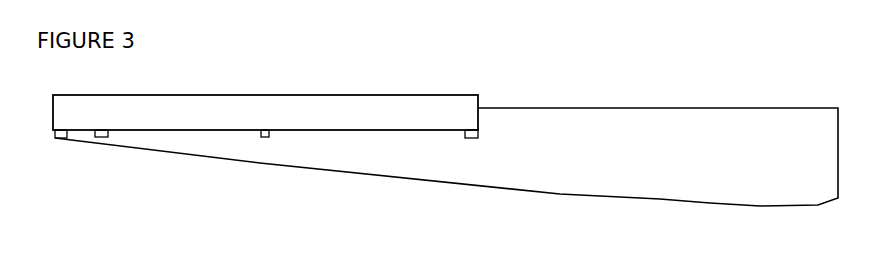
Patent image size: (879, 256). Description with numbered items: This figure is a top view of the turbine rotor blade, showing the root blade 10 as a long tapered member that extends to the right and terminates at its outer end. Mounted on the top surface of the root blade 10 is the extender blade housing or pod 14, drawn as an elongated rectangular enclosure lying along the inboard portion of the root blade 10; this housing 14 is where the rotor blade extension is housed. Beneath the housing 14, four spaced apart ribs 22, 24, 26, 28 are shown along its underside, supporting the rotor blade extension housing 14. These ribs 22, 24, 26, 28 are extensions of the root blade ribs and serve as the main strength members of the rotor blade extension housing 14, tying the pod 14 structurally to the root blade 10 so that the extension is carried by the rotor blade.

The root blade 10 is at (775, 128).
The extender blade housing 14 is at (152, 117).
The rib 22 is at (53, 138).
The rib 24 is at (102, 138).
The rib 26 is at (265, 137).
The rib 28 is at (462, 138).